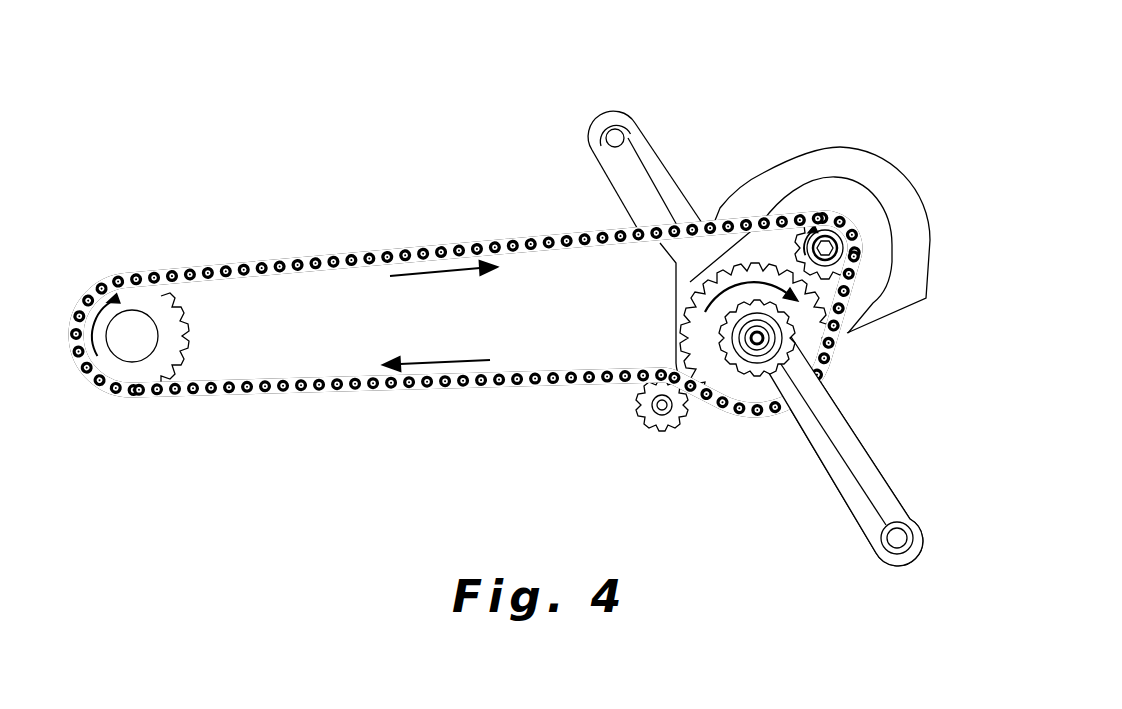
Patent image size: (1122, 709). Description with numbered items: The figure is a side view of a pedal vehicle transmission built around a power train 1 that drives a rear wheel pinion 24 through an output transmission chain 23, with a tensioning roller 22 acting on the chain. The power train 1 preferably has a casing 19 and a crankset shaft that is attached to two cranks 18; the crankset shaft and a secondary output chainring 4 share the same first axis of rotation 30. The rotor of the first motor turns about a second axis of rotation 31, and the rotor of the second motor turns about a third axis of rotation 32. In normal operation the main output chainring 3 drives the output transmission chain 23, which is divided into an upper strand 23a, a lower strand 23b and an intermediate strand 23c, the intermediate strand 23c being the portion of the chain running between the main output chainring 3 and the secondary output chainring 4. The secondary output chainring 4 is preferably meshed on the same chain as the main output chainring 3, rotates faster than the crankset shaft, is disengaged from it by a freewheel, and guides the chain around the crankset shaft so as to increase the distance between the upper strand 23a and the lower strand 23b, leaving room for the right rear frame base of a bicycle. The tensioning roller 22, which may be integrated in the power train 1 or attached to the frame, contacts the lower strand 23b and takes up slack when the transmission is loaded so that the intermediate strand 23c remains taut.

The power train 1 is at (900, 130).
The main output chainring 3 is at (830, 263).
The secondary output chainring 4 is at (810, 347).
The cranks 18 is at (860, 470).
The casing 19 is at (819, 150).
The tensioning roller 22 is at (650, 425).
The output transmission chain 23 is at (516, 341).
The upper strand 23a is at (313, 265).
The lower strand 23b is at (322, 390).
The intermediate strand 23c is at (838, 345).
The rear wheel pinion 24 is at (160, 315).
The first axis of rotation 30 is at (753, 347).
The second axis of rotation 31 is at (833, 250).
The third axis of rotation 32 is at (720, 272).